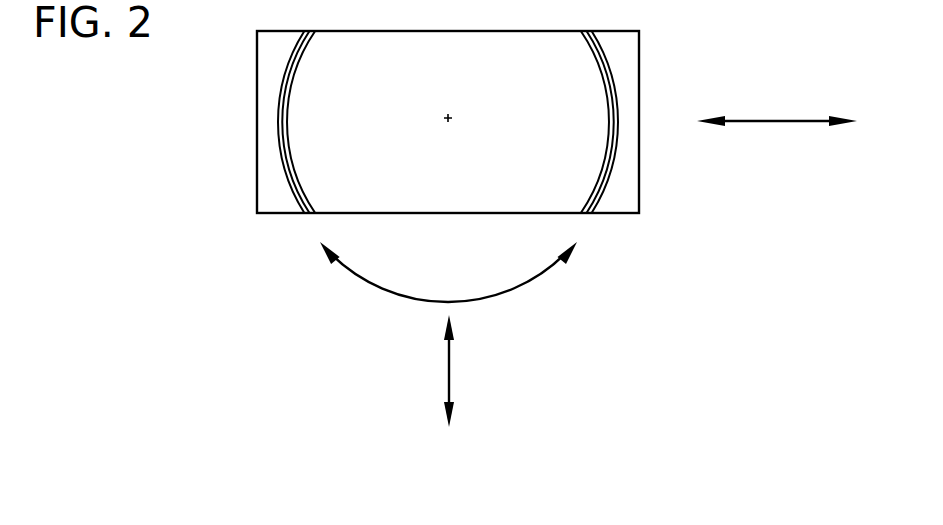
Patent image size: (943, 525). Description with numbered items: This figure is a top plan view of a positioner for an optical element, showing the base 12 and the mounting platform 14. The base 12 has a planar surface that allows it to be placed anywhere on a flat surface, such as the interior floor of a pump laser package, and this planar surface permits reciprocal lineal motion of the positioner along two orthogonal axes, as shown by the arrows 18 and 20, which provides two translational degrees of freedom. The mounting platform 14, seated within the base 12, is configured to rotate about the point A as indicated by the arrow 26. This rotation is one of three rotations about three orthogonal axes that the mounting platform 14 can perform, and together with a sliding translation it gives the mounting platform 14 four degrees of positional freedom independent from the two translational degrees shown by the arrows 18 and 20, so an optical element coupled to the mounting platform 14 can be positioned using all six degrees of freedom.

The base 12 is at (615, 213).
The mounting platform 14 is at (462, 213).
The arrow 18 is at (447, 377).
The arrow 20 is at (782, 121).
The arrow 26 is at (497, 297).
The point A is at (440, 119).